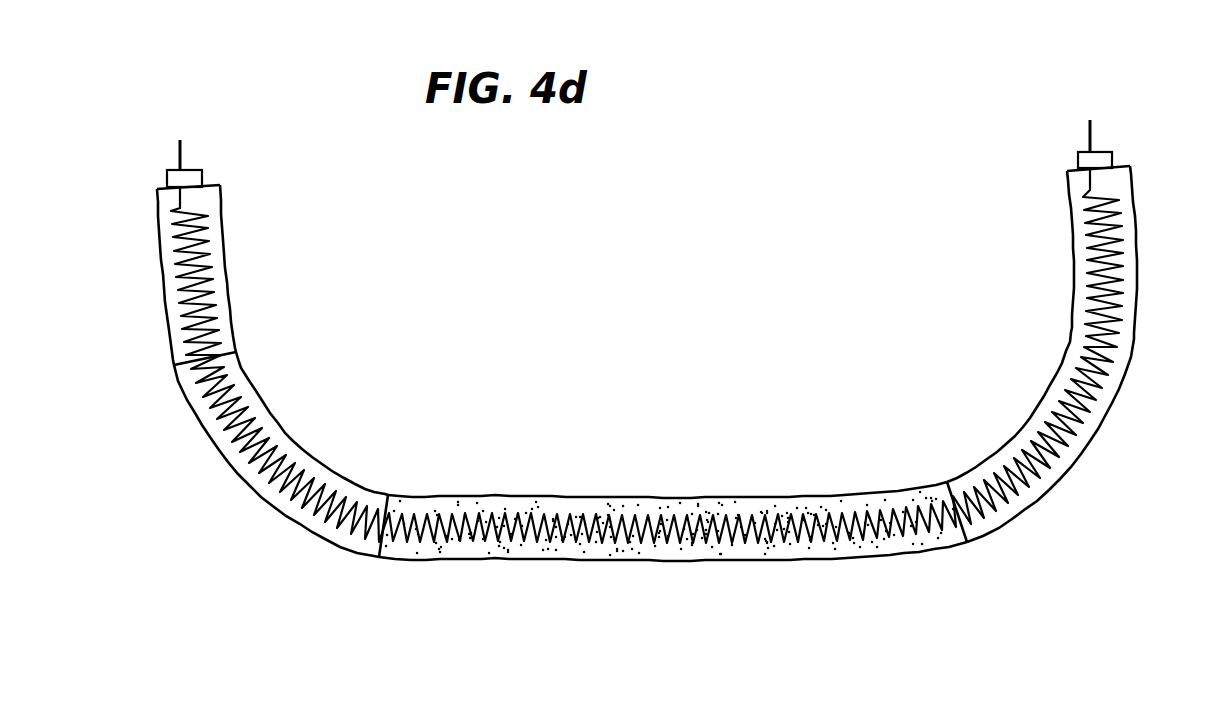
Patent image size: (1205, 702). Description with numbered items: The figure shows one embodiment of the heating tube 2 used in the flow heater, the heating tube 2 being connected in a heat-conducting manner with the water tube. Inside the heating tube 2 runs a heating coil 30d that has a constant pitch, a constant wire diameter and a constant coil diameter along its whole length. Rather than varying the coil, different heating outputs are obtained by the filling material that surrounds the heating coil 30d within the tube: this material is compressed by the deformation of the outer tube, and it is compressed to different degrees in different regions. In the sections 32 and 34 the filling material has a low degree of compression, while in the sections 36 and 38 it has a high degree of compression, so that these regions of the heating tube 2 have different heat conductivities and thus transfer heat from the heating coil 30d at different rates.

The heating tube 2 is at (662, 498).
The heating coil 30d is at (797, 518).
The section with low degree of compression 32 is at (535, 545).
The section with low degree of compression 34 is at (188, 275).
The section with high degree of compression 36 is at (1134, 257).
The section with high degree of compression 38 is at (293, 520).